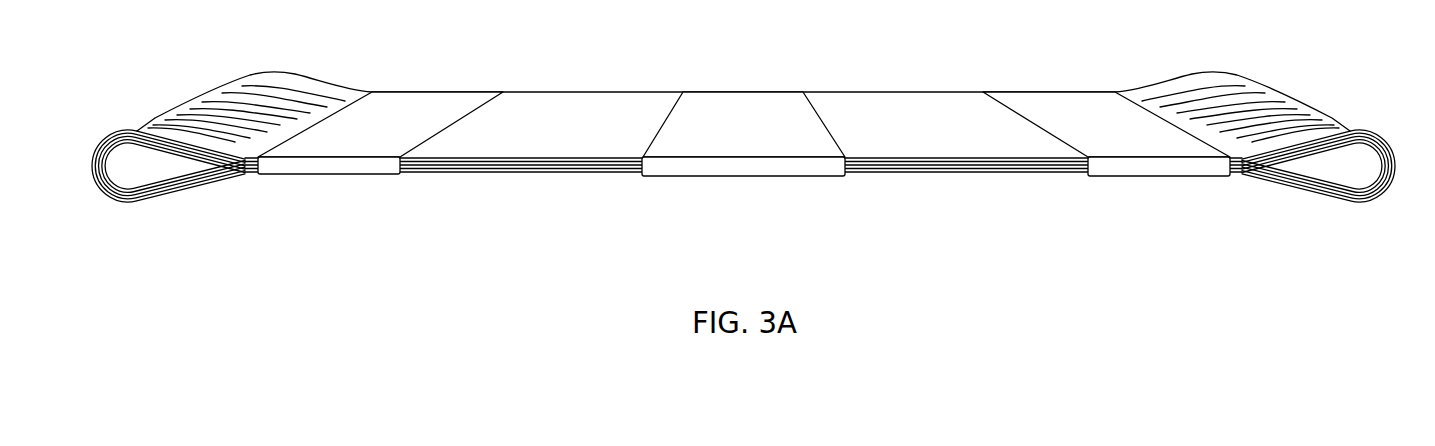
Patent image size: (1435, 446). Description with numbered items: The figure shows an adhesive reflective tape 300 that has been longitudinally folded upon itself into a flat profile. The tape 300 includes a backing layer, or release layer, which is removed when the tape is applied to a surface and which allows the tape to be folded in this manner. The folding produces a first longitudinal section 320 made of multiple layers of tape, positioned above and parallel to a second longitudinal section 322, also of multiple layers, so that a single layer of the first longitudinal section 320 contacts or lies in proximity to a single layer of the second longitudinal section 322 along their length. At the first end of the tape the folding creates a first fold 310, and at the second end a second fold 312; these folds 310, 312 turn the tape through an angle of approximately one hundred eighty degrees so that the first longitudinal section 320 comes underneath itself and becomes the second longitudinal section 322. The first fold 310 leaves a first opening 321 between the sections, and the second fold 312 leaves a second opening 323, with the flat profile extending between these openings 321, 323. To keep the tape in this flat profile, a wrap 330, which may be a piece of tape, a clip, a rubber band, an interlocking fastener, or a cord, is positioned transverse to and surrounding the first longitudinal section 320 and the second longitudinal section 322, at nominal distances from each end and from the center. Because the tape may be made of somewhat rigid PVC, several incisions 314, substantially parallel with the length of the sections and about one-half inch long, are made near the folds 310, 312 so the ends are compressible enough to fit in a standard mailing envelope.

The adhesive reflective tape 300 is at (742, 136).
The first fold 310 is at (150, 176).
The second fold 312 is at (1335, 177).
The incisions 314 is at (257, 92).
The first longitudinal section 320 is at (743, 136).
The first opening 321 is at (142, 178).
The second longitudinal section 322 is at (967, 178).
The second opening 323 is at (1343, 177).
The wrap 330 is at (320, 165).